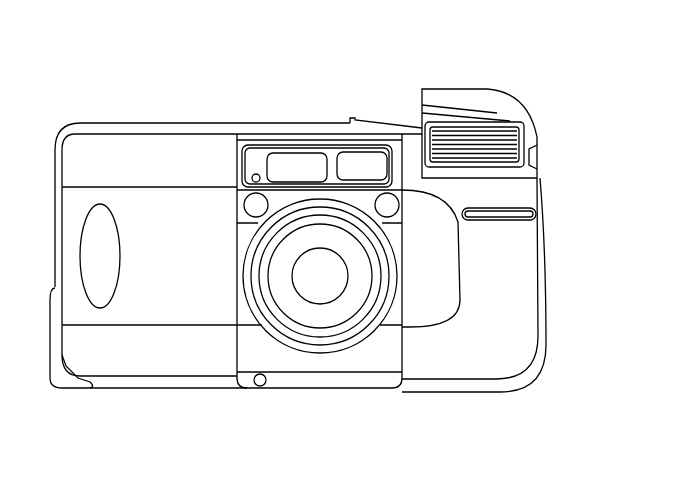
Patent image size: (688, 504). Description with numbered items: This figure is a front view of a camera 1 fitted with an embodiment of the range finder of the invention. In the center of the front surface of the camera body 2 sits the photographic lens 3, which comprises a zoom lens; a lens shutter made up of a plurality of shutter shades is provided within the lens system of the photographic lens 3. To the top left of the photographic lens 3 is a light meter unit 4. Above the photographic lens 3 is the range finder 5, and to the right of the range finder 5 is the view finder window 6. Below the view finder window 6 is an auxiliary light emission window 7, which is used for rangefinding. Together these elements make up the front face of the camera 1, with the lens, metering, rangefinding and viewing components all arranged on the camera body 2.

The camera 1 is at (488, 60).
The camera body 2 is at (545, 278).
The photographic lens 3 is at (322, 282).
The light meter unit 4 is at (255, 206).
The range finder 5 is at (293, 168).
The view finder window 6 is at (365, 165).
The auxiliary light emission window 7 is at (383, 207).